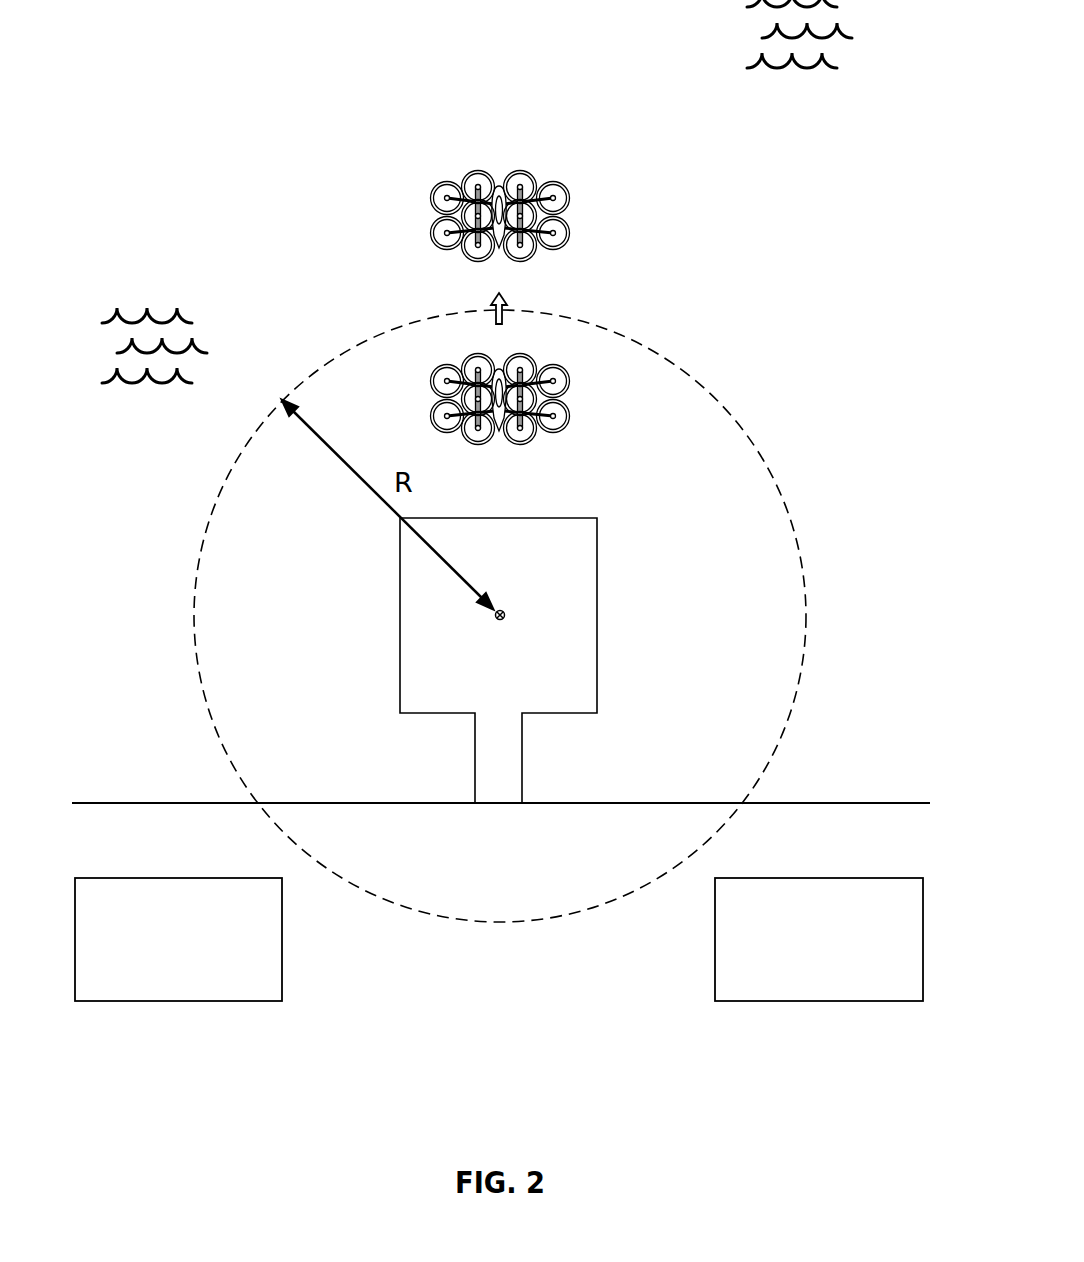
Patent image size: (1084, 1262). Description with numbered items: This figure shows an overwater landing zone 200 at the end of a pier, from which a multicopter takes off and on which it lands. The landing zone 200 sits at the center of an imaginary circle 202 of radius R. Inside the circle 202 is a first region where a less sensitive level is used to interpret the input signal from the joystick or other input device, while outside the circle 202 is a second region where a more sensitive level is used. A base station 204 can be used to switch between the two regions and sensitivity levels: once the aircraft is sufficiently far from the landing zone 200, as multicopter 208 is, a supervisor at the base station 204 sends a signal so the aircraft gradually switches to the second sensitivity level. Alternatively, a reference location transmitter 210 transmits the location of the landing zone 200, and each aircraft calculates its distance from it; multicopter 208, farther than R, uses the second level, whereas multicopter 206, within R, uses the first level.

The landing zone 200 is at (597, 614).
The circle 202 is at (807, 612).
The base station 204 is at (150, 877).
The multicopter 206 is at (570, 397).
The multicopter 208 is at (570, 214).
The reference location transmitter 210 is at (790, 877).